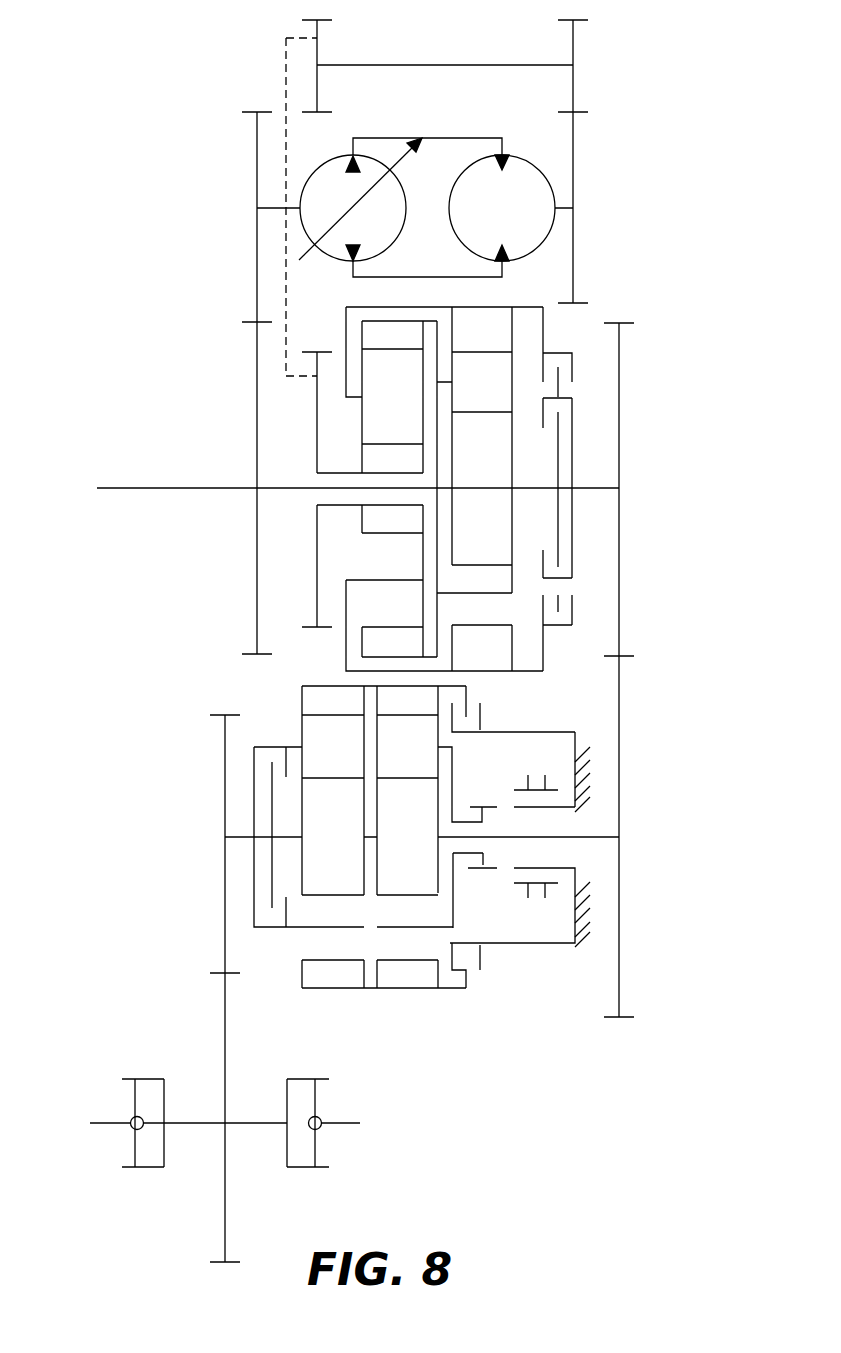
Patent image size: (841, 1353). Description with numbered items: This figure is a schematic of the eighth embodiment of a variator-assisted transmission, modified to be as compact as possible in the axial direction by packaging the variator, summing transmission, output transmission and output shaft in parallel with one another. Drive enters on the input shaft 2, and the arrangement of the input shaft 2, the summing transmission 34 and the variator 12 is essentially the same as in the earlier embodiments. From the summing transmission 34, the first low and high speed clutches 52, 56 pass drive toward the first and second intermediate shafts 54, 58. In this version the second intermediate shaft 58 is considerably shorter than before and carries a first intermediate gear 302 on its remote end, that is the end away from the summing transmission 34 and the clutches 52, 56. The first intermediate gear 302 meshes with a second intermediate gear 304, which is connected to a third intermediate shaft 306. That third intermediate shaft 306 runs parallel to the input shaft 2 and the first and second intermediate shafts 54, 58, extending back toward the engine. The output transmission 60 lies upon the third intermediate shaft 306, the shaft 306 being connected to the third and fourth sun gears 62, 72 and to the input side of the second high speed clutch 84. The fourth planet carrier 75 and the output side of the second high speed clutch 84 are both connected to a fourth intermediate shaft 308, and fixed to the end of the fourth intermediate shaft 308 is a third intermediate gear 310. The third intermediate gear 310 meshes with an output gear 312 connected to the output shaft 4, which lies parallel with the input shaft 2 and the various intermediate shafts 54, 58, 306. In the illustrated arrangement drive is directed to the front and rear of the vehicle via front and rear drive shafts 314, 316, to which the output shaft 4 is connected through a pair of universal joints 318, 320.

The input shaft 2 is at (160, 488).
The output shaft 4 is at (253, 1120).
The variator 12 is at (447, 132).
The summing transmission 34 is at (587, 291).
The first low speed clutch 52 is at (572, 360).
The first intermediate shaft 54 is at (535, 488).
The first high speed clutch 56 is at (572, 613).
The second intermediate shaft 58 is at (597, 490).
The output transmission 60 is at (398, 995).
The third sun gear 62 is at (438, 884).
The fourth sun gear 72 is at (317, 897).
The fourth planet carrier 75 is at (290, 748).
The second high speed clutch 84 is at (262, 747).
The first intermediate gear 302 is at (619, 428).
The second intermediate gear 304 is at (619, 770).
The third intermediate shaft 306 is at (592, 837).
The fourth intermediate shaft 308 is at (235, 838).
The third intermediate gear 310 is at (225, 787).
The output gear 312 is at (225, 1025).
The front drive shaft 314 is at (100, 1128).
The rear drive shaft 316 is at (345, 1120).
The universal joint 318 is at (130, 1120).
The universal joint 320 is at (320, 1128).